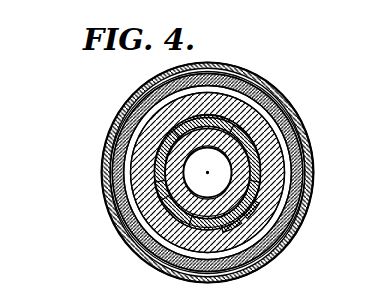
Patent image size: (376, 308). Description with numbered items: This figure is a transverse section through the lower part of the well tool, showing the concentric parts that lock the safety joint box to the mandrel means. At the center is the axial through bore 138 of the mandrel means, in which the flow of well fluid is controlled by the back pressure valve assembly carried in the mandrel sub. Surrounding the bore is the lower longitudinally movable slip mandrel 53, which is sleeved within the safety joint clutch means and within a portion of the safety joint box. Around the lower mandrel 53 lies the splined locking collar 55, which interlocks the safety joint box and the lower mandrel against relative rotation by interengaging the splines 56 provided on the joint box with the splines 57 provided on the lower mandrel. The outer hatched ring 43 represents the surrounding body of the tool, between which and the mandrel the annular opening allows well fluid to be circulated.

The body 43 is at (272, 188).
The lower slip mandrel 53 is at (168, 160).
The splined locking collar 55 is at (257, 159).
The splines on the joint box 56 is at (243, 204).
The splines on the lower mandrel 57 is at (240, 222).
The axial through bore 138 is at (185, 181).